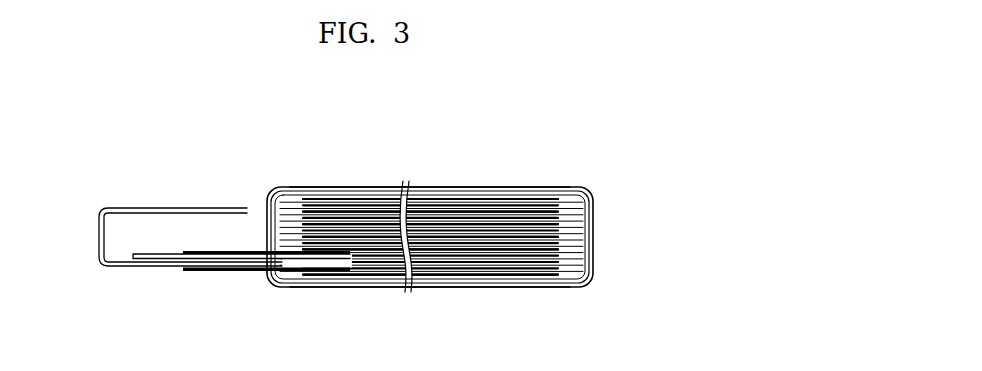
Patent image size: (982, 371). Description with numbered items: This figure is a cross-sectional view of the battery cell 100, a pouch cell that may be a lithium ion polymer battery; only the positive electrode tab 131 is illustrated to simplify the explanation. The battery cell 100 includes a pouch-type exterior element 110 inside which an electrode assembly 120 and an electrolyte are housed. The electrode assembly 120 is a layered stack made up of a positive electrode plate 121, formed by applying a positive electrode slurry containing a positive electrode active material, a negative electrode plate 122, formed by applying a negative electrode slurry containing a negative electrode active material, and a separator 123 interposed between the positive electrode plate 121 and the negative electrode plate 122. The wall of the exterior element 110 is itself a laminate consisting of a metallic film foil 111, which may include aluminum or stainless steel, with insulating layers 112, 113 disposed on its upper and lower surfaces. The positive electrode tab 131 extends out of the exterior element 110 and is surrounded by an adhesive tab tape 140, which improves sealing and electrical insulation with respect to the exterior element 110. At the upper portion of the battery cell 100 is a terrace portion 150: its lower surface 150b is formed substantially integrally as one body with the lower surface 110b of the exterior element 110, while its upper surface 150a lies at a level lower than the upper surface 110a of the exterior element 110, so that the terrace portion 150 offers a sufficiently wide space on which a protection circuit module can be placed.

The battery cell 100 is at (669, 100).
The exterior element 110 is at (479, 237).
The upper surface of the exterior element 110a is at (336, 188).
The lower surface of the exterior element 110b is at (317, 286).
The metallic film foil 111 is at (583, 232).
The insulating layer 112 is at (594, 219).
The insulating layer 113 is at (594, 247).
The electrode assembly 120 is at (431, 194).
The positive electrode plate 121 is at (442, 200).
The negative electrode plate 122 is at (423, 141).
The separator 123 is at (460, 202).
The positive electrode tab 131 is at (98, 236).
The adhesive tab tape 140 is at (153, 268).
The terrace portion 150 is at (256, 248).
The upper surface of the terrace portion 150a is at (222, 251).
The lower surface of the terrace portion 150b is at (195, 250).